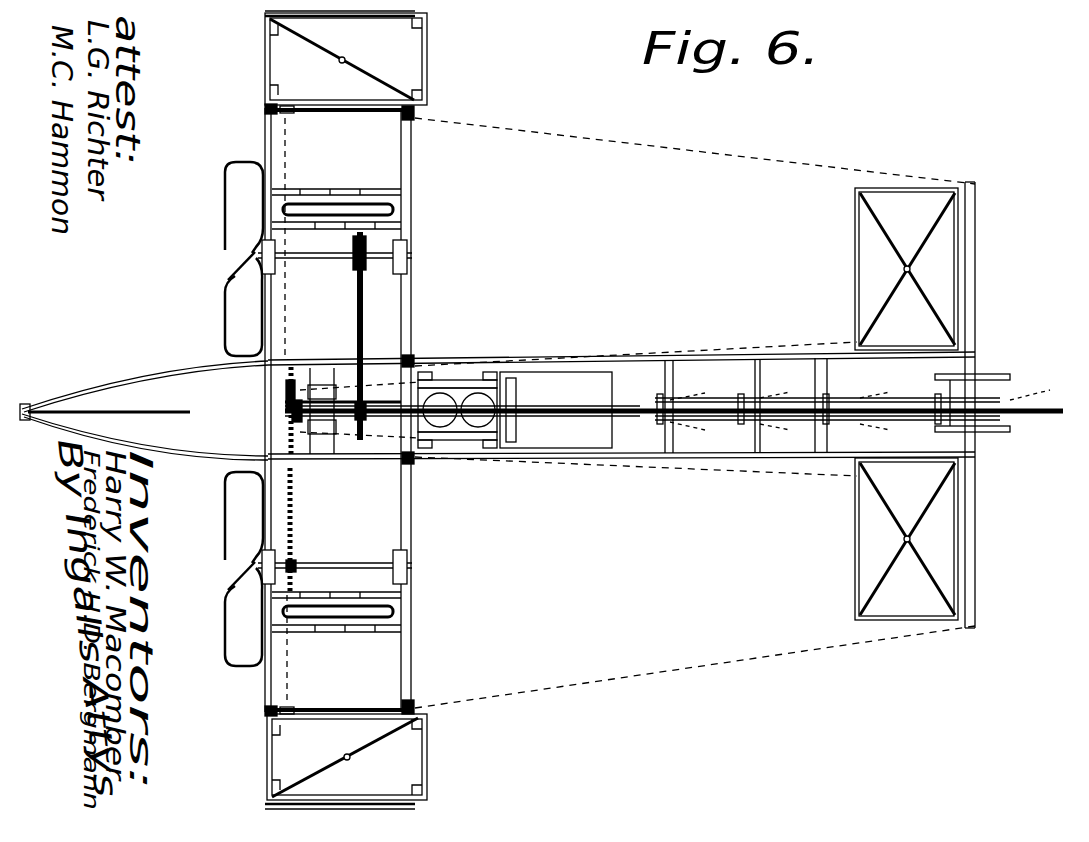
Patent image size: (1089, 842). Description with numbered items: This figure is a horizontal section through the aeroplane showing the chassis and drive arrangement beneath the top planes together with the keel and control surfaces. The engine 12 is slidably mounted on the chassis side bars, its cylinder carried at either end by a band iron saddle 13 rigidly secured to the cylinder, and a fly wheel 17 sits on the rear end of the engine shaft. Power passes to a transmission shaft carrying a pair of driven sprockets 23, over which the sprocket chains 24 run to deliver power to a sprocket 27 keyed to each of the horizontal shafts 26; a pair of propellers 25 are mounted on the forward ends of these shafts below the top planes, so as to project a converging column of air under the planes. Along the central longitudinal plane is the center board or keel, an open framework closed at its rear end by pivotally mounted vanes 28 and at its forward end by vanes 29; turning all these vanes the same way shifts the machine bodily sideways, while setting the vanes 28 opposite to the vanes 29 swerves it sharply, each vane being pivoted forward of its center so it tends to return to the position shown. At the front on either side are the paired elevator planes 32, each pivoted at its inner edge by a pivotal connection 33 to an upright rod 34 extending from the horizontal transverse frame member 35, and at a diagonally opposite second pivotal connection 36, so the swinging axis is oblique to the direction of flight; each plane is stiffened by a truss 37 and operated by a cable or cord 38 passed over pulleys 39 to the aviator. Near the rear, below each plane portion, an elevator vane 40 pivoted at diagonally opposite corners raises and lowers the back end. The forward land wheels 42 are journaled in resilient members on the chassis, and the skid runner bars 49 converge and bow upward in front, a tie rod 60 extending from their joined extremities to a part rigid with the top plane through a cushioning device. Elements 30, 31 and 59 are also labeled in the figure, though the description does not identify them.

The engine 12 is at (478, 428).
The band iron saddle 13 is at (440, 372).
The fly wheel 17 is at (516, 387).
The driven sprockets 23 is at (286, 390).
The sprocket chains 24 is at (356, 322).
The propellers 25 is at (228, 300).
The horizontal shafts 26 is at (328, 262).
The sprocket 27 is at (353, 246).
The vanes 28 is at (692, 420).
The vanes 29 is at (440, 400).
The tail frame strut 30 is at (715, 400).
The main shaft 31 is at (378, 395).
The elevator planes 32 is at (268, 50).
The pivotal connection 33 is at (265, 108).
The upright rod 34 is at (262, 116).
The horizontal transverse frame member 35 is at (272, 136).
The second pivotal connection 36 is at (427, 20).
The truss 37 is at (335, 55).
The cable or cord 38 is at (413, 178).
The pulleys 39 is at (418, 113).
The elevator vane 40 is at (915, 405).
The forward land wheels 42 is at (360, 200).
The runner bars 49 is at (140, 380).
The tail cross bar 59 is at (1000, 377).
The tie rod 60 is at (175, 411).